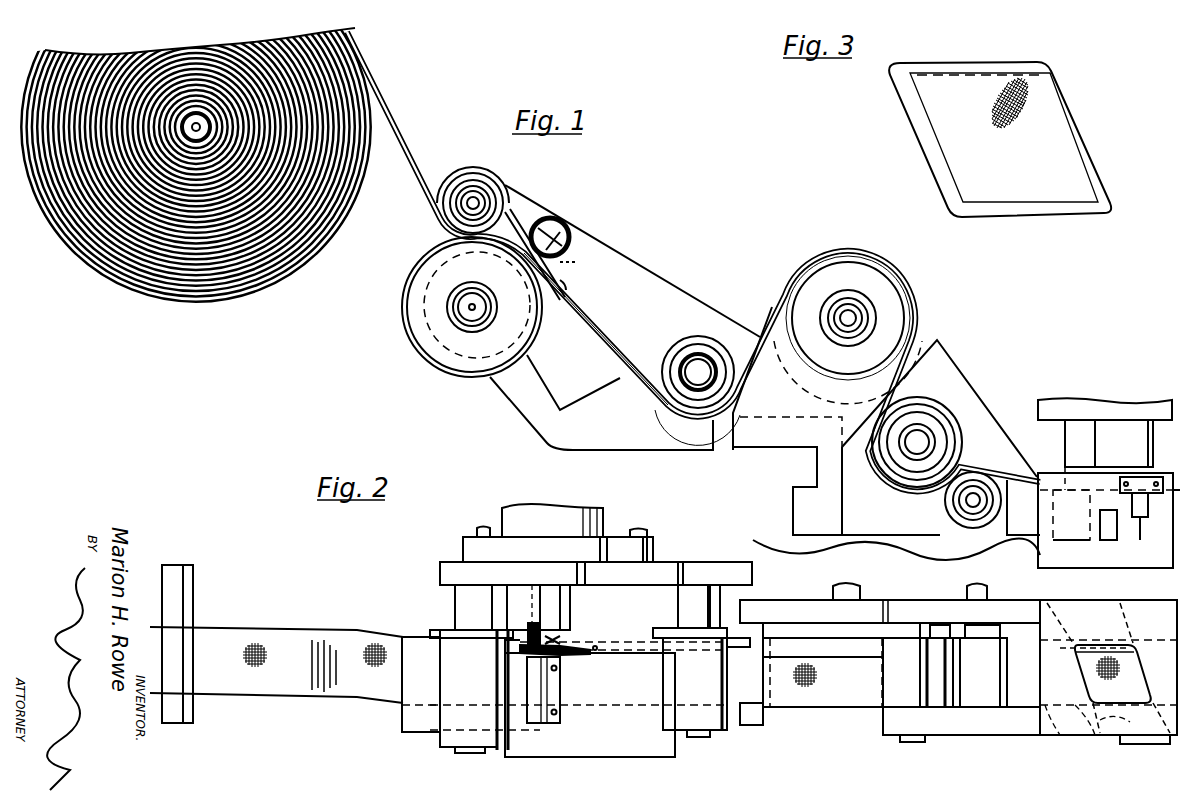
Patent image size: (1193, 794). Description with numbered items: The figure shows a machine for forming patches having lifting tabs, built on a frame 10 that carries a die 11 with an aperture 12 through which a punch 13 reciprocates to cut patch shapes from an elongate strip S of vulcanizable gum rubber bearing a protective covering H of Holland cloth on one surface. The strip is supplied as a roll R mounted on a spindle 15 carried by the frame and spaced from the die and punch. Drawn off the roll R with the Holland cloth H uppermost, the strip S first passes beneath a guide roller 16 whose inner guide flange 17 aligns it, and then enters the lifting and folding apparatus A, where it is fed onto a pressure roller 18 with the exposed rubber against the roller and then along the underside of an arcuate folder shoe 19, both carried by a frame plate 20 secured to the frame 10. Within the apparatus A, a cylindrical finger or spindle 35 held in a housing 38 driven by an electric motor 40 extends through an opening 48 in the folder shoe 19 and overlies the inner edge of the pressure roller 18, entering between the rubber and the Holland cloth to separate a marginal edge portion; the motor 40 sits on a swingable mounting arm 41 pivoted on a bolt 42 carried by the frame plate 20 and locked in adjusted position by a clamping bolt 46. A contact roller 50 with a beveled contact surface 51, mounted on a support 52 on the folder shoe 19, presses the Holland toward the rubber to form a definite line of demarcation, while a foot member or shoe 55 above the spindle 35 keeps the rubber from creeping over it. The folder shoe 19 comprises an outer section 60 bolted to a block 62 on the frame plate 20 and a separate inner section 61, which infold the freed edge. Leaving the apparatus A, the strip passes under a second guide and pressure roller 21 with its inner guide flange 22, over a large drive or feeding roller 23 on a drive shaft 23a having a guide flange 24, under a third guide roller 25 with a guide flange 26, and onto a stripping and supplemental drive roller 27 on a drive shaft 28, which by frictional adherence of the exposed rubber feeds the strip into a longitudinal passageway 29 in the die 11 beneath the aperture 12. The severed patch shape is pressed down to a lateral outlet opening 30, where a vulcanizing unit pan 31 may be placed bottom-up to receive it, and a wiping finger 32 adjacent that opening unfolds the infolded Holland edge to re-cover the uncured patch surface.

In FIG. 1, the frame 10 is at (800, 515).
In FIG. 2, the frame 10 is at (1010, 735).
In FIG. 1, the die 11 is at (1085, 565).
In FIG. 2, the die 11 is at (1080, 735).
In FIG. 1, the aperture 12 is at (1063, 490).
In FIG. 2, the aperture 12 is at (1130, 648).
In FIG. 1, the punch 13 is at (1112, 430).
In FIG. 1, the spindle 15 is at (188, 118).
In FIG. 2, the spindle 15 is at (193, 603).
In FIG. 1, the guide roller 16 is at (466, 170).
In FIG. 2, the guide roller 16 is at (455, 720).
In FIG. 1, the inner guide flange 17 is at (487, 178).
In FIG. 2, the inner guide flange 17 is at (445, 628).
In FIG. 1, the pressure roller 18 is at (415, 333).
In FIG. 2, the pressure roller 18 is at (405, 725).
In FIG. 1, the arcuate folder shoe 19 is at (608, 341).
In FIG. 2, the arcuate folder shoe 19 is at (640, 690).
In FIG. 1, the frame plate 20 is at (682, 336).
In FIG. 2, the frame plate 20 is at (672, 580).
In FIG. 1, the second guide and pressure roller 21 is at (698, 354).
In FIG. 2, the second guide and pressure roller 21 is at (708, 735).
In FIG. 1, the inner guide flange 22 is at (686, 410).
In FIG. 2, the inner guide flange 22 is at (665, 630).
In FIG. 1, the drive or feeding roller 23 is at (880, 266).
In FIG. 2, the drive or feeding roller 23 is at (870, 710).
In FIG. 2, the drive shaft 23a is at (840, 590).
In FIG. 1, the guide flange 24 is at (800, 265).
In FIG. 2, the guide flange 24 is at (905, 625).
In FIG. 1, the third guide roller 25 is at (945, 427).
In FIG. 2, the third guide roller 25 is at (935, 710).
In FIG. 1, the guide flange 26 is at (930, 405).
In FIG. 2, the guide flange 26 is at (940, 625).
In FIG. 1, the stripping and supplemental drive roller 27 is at (985, 480).
In FIG. 2, the stripping and supplemental drive roller 27 is at (975, 710).
In FIG. 2, the drive shaft 28 is at (990, 593).
In FIG. 1, the longitudinal passageway 29 is at (1071, 515).
In FIG. 2, the longitudinal passageway 29 is at (1045, 735).
In FIG. 1, the lateral outlet opening 30 is at (1135, 560).
In FIG. 2, the lateral outlet opening 30 is at (1110, 735).
In FIG. 3, the vulcanizing unit pan 31 is at (1095, 215).
In FIG. 2, the vulcanizing unit pan 31 is at (1085, 616).
In FIG. 1, the wiping finger 32 is at (1122, 535).
In FIG. 2, the wiping finger 32 is at (1140, 745).
In FIG. 1, the cylindrical finger or spindle 35 is at (576, 262).
In FIG. 1, the housing 38 is at (567, 284).
In FIG. 2, the housing 38 is at (545, 595).
In FIG. 2, the electric motor 40 is at (510, 508).
In FIG. 2, the swingable mounting arm 41 is at (618, 537).
In FIG. 2, the bolt 42 is at (670, 521).
In FIG. 2, the clamping bolt 46 is at (480, 531).
In FIG. 2, the opening 48 is at (571, 601).
In FIG. 1, the contact roller 50 is at (565, 212).
In FIG. 2, the contact surface 51 is at (570, 660).
In FIG. 1, the support 52 is at (575, 232).
In FIG. 2, the support 52 is at (560, 715).
In FIG. 2, the foot member or shoe 55 is at (560, 640).
In FIG. 2, the outer section 60 is at (655, 750).
In FIG. 2, the inner section 61 is at (657, 595).
In FIG. 1, the block 62 is at (568, 398).
In FIG. 1, the lifting and folding apparatus A is at (652, 306).
In FIG. 2, the lifting and folding apparatus A is at (636, 596).
In FIG. 3, the protective covering H is at (955, 145).
In FIG. 2, the protective covering H is at (598, 645).
In FIG. 3, the pad P is at (1035, 195).
In FIG. 2, the pad P is at (1090, 665).
In FIG. 1, the roll R is at (197, 283).
In FIG. 2, the roll R is at (345, 625).
In FIG. 1, the strip S is at (418, 168).
In FIG. 2, the strip S is at (330, 690).